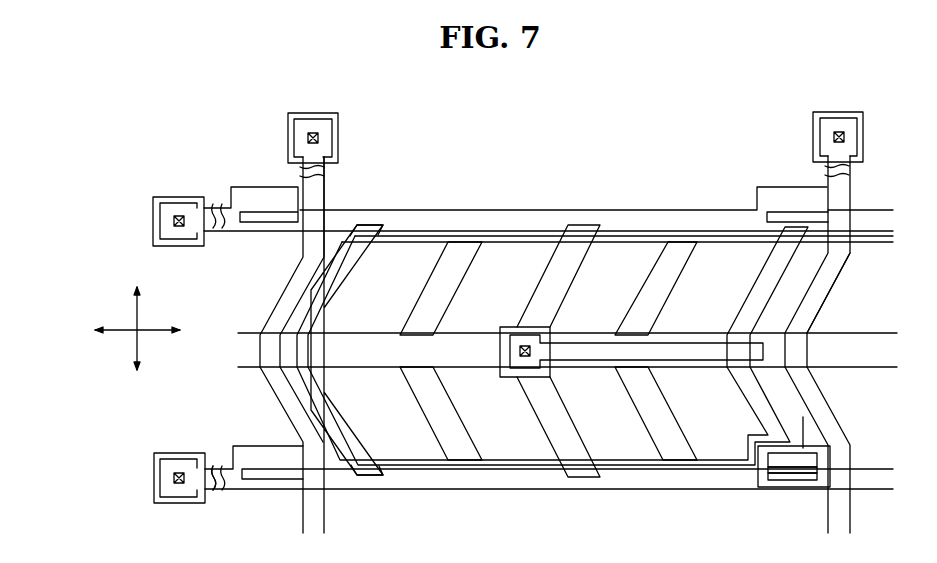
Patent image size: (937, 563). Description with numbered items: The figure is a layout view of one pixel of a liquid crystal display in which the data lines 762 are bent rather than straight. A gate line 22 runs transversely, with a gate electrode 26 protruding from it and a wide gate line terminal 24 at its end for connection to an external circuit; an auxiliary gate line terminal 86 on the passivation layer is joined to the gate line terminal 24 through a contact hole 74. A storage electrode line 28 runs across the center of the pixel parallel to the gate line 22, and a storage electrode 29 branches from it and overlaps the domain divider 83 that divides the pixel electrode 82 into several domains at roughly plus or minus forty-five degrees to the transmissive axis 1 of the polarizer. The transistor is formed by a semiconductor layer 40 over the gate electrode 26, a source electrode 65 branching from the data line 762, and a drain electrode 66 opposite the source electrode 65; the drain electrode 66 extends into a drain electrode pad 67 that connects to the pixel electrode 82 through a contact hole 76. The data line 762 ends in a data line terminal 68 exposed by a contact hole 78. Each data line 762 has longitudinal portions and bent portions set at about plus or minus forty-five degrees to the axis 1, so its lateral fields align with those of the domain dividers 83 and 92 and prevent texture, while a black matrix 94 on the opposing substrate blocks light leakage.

The transmissive axis of a polarizer 1 is at (129, 322).
The gate line 22 is at (522, 490).
The gate line terminal 24 is at (179, 454).
The gate electrode 26 is at (837, 446).
The storage electrode line 28 is at (257, 324).
The storage electrode 29 is at (463, 237).
The semiconductor layer 40 is at (759, 487).
The source electrode 65 is at (807, 489).
The drain electrode 66 is at (778, 485).
The drain electrode pad 67 is at (553, 334).
The data line terminal 68 is at (847, 118).
The contact hole 74 is at (160, 478).
The contact hole 76 is at (520, 370).
The contact hole 78 is at (834, 120).
The pixel electrode 82 is at (420, 236).
The domain divider 83 is at (477, 262).
The auxiliary gate line terminal 86 is at (178, 503).
The domain divider 92 is at (373, 222).
The black matrix 94 is at (410, 473).
The data line 762 is at (845, 268).